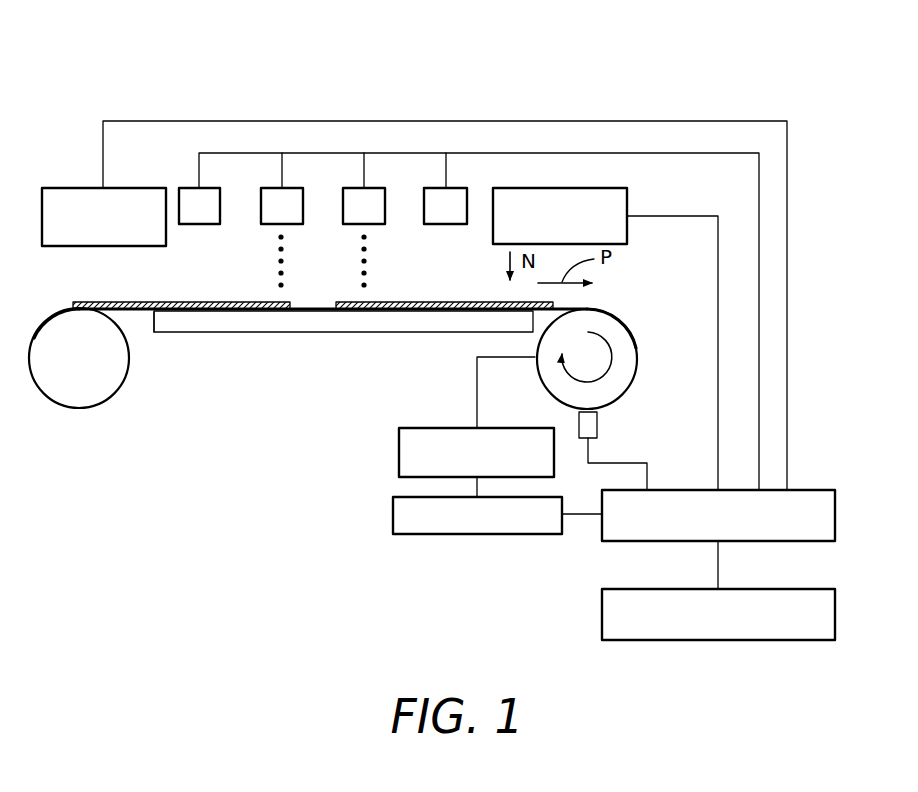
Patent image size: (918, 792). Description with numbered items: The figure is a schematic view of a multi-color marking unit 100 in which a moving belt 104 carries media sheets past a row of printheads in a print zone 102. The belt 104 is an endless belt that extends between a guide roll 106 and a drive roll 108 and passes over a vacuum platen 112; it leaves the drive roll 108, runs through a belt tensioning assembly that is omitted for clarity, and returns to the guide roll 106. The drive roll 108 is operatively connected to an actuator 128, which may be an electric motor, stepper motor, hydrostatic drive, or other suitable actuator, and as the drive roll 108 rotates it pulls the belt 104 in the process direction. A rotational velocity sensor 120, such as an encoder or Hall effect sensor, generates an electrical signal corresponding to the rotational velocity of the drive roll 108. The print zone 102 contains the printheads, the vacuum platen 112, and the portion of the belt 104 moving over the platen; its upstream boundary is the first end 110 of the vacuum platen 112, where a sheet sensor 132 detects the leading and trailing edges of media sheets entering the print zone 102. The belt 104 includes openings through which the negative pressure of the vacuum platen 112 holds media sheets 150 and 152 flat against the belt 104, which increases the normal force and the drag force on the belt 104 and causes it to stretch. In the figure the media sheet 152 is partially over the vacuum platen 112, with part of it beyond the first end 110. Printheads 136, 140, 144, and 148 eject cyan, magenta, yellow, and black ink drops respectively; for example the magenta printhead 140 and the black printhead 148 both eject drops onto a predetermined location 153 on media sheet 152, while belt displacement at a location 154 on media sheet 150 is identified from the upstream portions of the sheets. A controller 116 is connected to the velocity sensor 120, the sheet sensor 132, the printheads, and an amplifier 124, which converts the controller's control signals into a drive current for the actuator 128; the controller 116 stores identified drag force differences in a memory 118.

The marking unit 100 is at (174, 74).
The print zone 102 is at (158, 283).
The belt 104 is at (613, 317).
The guide roll 106 is at (78, 408).
The drive roll 108 is at (640, 358).
The first end 110 is at (154, 333).
The vacuum platen 112 is at (257, 333).
The controller 116 is at (638, 542).
The memory 118 is at (638, 641).
The velocity sensor 120 is at (627, 200).
The amplifier 124 is at (393, 514).
The actuator 128 is at (399, 452).
The sheet sensor 132 is at (83, 188).
The printhead 136 is at (210, 188).
The magenta printhead 140 is at (293, 188).
The yellow printhead 144 is at (375, 188).
The black printhead 148 is at (457, 188).
The media sheet 150 is at (422, 301).
The media sheet 152 is at (72, 308).
The predetermined location 153 is at (270, 283).
The location 154 is at (353, 283).